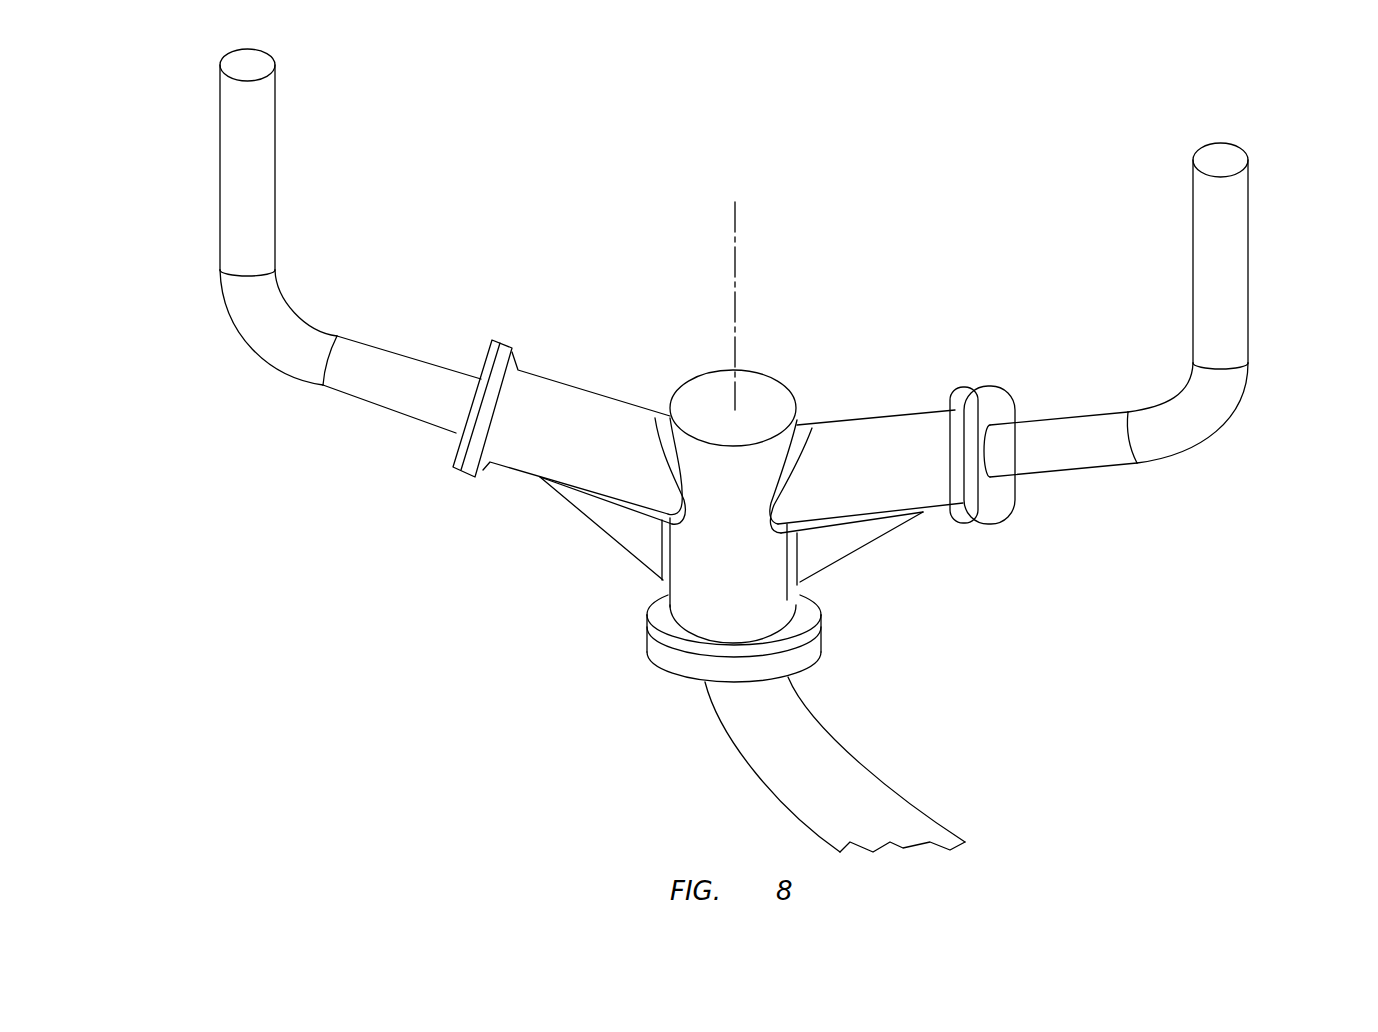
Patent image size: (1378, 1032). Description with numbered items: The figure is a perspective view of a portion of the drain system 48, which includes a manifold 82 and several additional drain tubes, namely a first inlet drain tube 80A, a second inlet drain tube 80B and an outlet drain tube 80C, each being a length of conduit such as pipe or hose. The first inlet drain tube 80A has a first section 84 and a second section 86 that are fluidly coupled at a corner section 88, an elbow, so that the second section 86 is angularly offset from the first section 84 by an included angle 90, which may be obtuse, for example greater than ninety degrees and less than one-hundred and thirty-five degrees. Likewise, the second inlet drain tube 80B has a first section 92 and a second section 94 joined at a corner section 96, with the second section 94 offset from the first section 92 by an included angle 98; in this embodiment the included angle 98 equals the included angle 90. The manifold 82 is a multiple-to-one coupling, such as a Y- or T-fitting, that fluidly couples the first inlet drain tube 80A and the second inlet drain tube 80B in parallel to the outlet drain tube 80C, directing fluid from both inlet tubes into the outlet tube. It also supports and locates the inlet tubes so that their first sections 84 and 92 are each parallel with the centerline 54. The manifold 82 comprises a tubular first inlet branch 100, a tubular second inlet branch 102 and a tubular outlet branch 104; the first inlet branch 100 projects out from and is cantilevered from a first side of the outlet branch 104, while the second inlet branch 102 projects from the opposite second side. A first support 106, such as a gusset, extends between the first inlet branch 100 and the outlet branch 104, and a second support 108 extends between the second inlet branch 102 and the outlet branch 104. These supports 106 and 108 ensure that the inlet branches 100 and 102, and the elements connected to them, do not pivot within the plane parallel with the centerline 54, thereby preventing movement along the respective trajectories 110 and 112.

The drain system 48 is at (1290, 163).
The centerline 54 is at (737, 215).
The first inlet drain tube 80A is at (290, 241).
The second inlet drain tube 80B is at (1176, 347).
The outlet drain tube 80C is at (906, 789).
The manifold 82 is at (644, 597).
The first section 84 is at (280, 147).
The second section 86 is at (415, 350).
The corner section 88 is at (248, 343).
The included angle 90 is at (373, 340).
The first section 92 is at (1192, 207).
The second section 94 is at (1062, 474).
The corner section 96 is at (1222, 426).
The included angle 98 is at (1189, 300).
The first inlet branch 100 is at (577, 380).
The second inlet branch 102 is at (868, 415).
The outlet branch 104 is at (820, 605).
The first support 106 is at (590, 523).
The second support 108 is at (858, 548).
The trajectory 110 is at (206, 497).
The trajectory 112 is at (1349, 452).